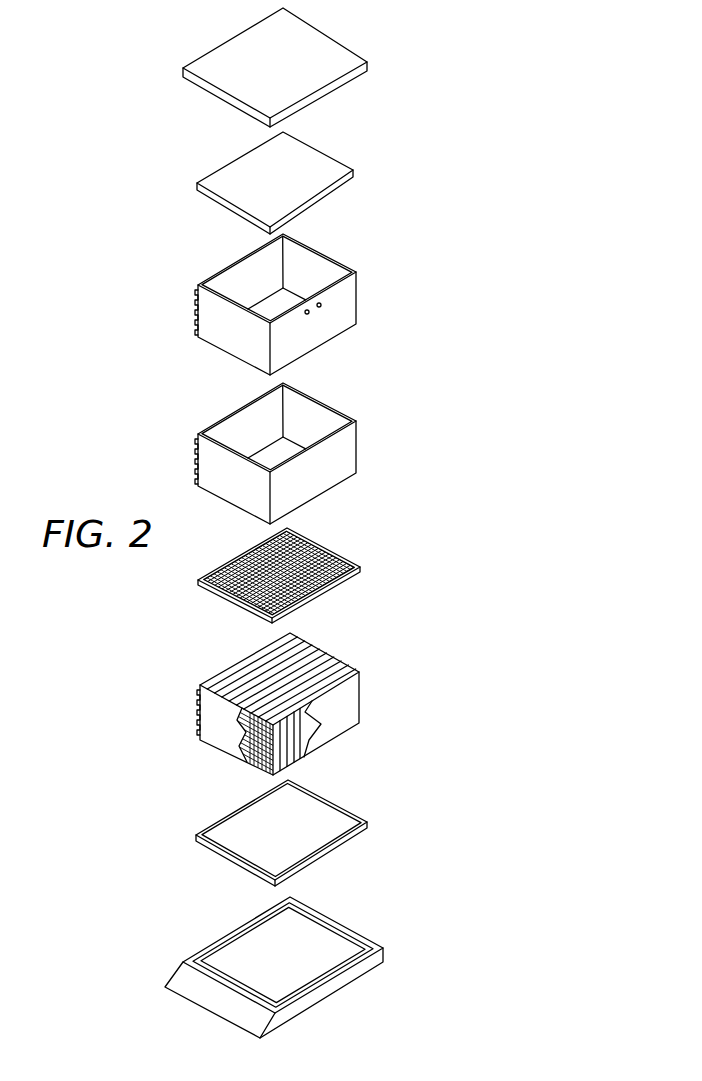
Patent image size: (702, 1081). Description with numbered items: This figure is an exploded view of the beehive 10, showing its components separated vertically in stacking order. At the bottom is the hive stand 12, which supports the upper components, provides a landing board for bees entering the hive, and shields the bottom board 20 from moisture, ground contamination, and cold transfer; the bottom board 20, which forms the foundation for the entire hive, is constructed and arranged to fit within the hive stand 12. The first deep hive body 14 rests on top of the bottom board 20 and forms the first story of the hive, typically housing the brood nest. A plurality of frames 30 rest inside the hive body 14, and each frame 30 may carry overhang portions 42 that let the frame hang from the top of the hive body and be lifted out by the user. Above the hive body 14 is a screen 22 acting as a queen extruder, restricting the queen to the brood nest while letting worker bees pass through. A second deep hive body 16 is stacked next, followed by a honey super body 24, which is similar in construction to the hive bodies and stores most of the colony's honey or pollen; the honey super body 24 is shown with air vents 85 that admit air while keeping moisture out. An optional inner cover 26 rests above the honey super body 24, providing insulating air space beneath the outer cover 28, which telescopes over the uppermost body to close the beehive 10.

The beehive 10 is at (446, 512).
The hive stand 12 is at (338, 985).
The deep hive body 14 is at (297, 725).
The deep hive body 16 is at (347, 458).
The bottom board 20 is at (368, 822).
The screen 22 is at (362, 569).
The honey super body 24 is at (321, 304).
The inner cover 26 is at (354, 170).
The outer cover 28 is at (368, 61).
The frame 30 is at (290, 758).
The overhang portion 42 is at (245, 740).
The air vent 85 is at (309, 314).